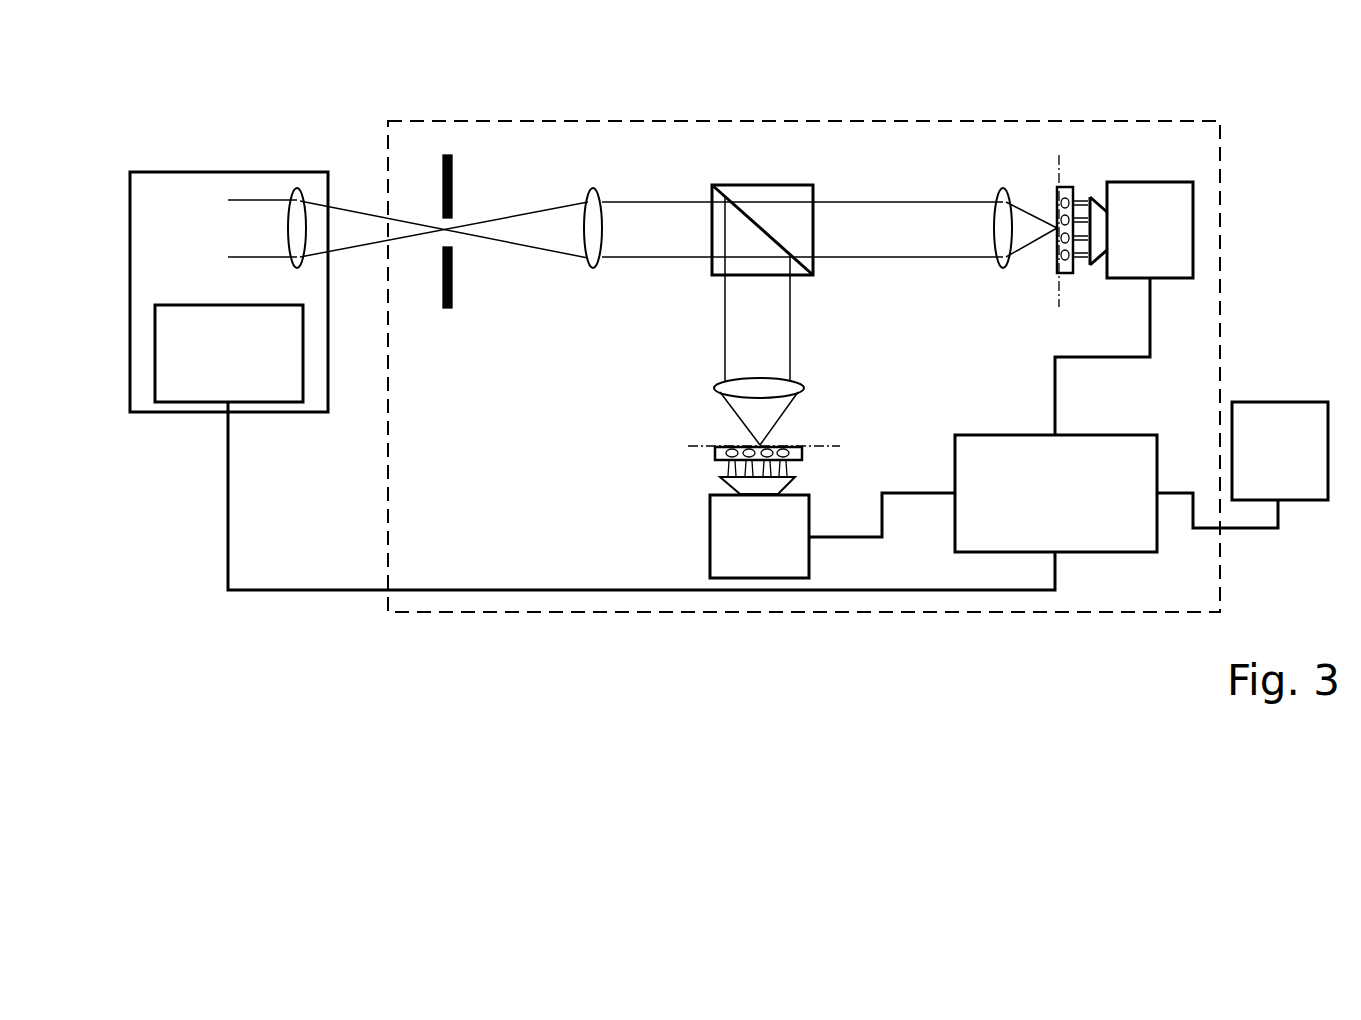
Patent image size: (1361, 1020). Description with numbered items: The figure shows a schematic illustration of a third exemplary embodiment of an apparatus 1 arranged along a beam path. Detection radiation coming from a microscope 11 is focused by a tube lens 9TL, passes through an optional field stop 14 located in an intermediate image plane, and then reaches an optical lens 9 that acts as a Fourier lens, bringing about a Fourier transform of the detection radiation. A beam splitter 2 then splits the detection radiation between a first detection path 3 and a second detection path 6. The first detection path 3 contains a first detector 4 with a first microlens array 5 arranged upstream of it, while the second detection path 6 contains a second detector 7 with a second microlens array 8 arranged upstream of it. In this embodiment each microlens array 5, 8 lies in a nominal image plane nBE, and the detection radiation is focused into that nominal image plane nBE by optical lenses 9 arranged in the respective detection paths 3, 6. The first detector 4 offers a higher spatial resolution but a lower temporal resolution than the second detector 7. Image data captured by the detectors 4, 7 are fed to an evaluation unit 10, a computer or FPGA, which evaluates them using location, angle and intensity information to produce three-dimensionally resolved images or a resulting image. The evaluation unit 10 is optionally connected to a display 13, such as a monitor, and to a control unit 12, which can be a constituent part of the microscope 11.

The apparatus 1 is at (680, 92).
The beam splitter 2 is at (795, 185).
The first detection path 3 is at (915, 200).
The first detector 4 is at (1138, 244).
The first microlens array 5 is at (1067, 187).
The second detection path 6 is at (723, 327).
The second detector 7 is at (765, 554).
The second microlens array 8 is at (715, 459).
The optical lens 9 is at (588, 192).
The tube lens 9TL is at (292, 193).
The evaluation unit 10 is at (1036, 510).
The microscope 11 is at (162, 284).
The control unit 12 is at (210, 368).
The display 13 is at (1260, 468).
The field stop 14 is at (443, 176).
The nominal image plane nBE is at (706, 445).